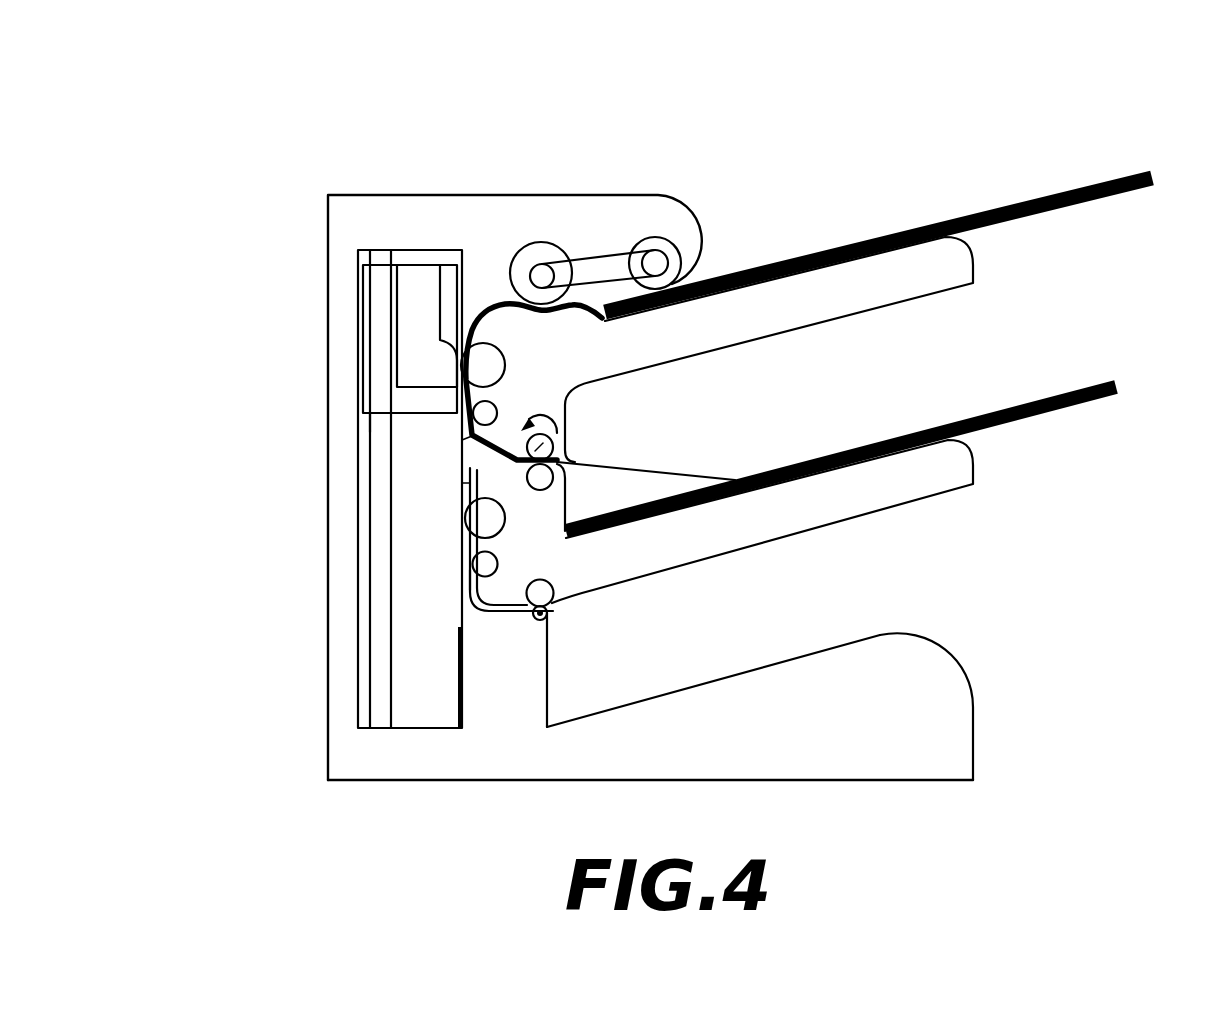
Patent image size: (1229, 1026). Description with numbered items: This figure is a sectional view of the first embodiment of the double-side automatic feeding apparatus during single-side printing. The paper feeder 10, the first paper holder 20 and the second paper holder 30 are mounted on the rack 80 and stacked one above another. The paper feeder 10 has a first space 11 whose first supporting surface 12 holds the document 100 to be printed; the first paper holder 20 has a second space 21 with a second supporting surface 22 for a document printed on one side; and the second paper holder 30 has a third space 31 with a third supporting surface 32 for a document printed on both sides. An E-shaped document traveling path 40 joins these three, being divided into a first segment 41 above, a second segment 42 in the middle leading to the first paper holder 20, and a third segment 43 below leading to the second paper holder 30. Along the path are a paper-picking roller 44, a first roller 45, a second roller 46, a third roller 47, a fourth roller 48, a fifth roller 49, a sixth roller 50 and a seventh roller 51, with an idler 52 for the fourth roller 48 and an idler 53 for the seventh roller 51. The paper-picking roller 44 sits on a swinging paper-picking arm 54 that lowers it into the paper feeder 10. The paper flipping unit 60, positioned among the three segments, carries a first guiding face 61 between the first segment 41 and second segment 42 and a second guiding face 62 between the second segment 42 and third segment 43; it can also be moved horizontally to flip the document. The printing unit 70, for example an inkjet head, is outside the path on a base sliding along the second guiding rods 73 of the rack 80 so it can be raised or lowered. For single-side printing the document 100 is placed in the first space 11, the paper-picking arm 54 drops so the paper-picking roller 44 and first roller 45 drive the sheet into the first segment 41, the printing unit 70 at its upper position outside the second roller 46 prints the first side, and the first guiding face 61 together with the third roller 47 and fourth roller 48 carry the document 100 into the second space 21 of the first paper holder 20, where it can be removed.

The paper feeder 10 is at (983, 187).
The first space 11 is at (897, 220).
The first supporting surface 12 is at (835, 247).
The first paper holder 20 is at (842, 420).
The second space 21 is at (917, 330).
The second supporting surface 22 is at (803, 459).
The second paper holder 30 is at (842, 646).
The third space 31 is at (917, 563).
The third supporting surface 32 is at (750, 670).
The document traveling path 40 is at (490, 454).
The first segment 41 is at (497, 300).
The second segment 42 is at (557, 461).
The third segment 43 is at (506, 612).
The paper-picking roller 44 is at (657, 260).
The first roller 45 is at (541, 244).
The second roller 46 is at (485, 374).
The third roller 47 is at (487, 413).
The fourth roller 48 is at (485, 520).
The fifth roller 49 is at (484, 563).
The sixth roller 50 is at (470, 578).
The seventh roller 51 is at (541, 614).
The idler 52 is at (543, 478).
The idler 53 is at (541, 618).
The paper-picking arm 54 is at (587, 279).
The paper flipping unit 60 is at (347, 482).
The first guiding face 61 is at (515, 458).
The second guiding face 62 is at (517, 466).
The printing unit 70 is at (398, 295).
The second guiding rods 73 is at (380, 422).
The rack 80 is at (340, 318).
The document 100 is at (897, 296).